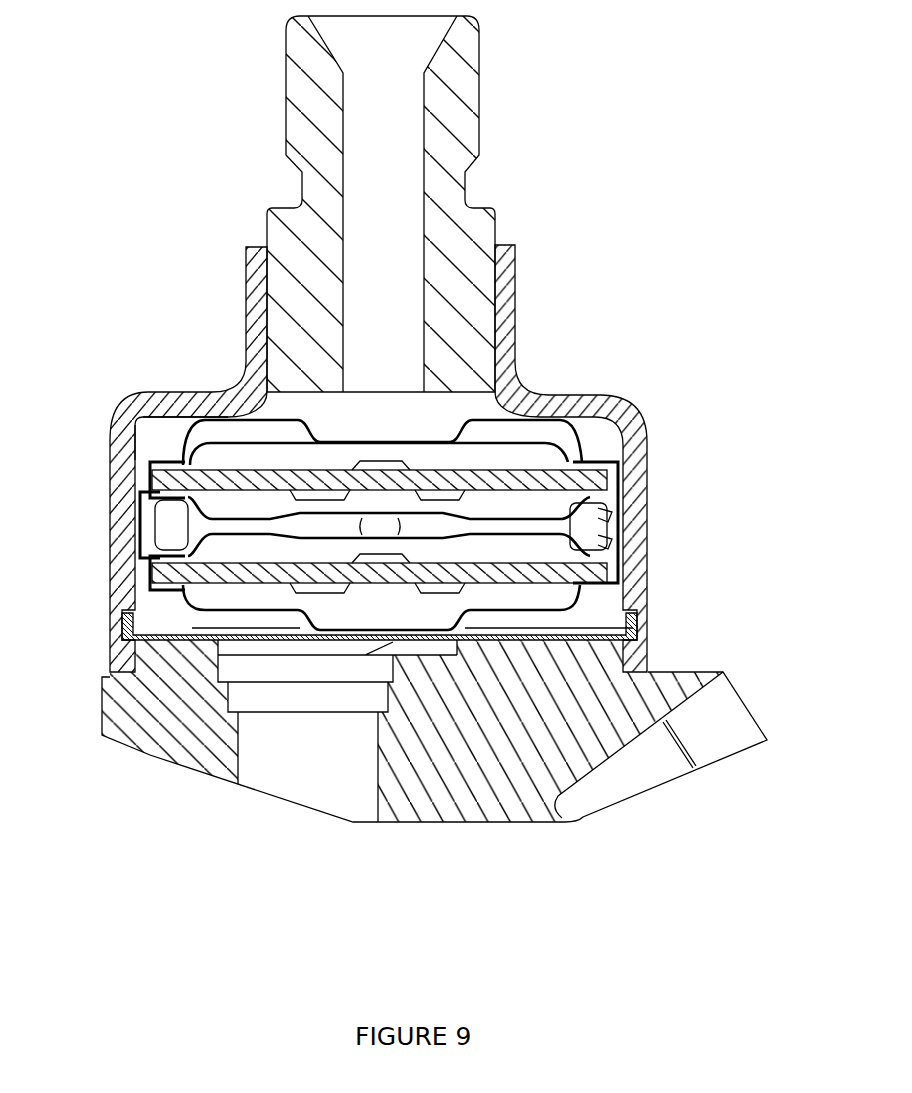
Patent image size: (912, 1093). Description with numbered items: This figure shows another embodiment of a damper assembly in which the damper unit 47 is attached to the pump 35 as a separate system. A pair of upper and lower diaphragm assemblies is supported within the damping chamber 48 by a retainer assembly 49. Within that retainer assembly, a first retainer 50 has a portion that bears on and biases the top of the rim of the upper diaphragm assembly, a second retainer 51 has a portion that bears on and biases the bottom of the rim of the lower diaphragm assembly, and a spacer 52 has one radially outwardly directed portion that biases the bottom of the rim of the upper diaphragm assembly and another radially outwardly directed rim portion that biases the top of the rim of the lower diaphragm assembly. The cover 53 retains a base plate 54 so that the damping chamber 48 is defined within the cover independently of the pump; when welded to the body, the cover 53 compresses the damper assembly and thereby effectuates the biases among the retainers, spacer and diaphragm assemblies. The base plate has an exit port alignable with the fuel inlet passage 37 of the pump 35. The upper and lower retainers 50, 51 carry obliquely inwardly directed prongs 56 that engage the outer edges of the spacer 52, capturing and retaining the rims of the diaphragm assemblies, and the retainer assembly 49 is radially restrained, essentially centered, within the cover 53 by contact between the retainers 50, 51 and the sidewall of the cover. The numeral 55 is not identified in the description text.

The damper unit 47 is at (595, 302).
The damping chamber 48 is at (172, 432).
The retainer assembly 49 is at (571, 425).
The first retainer 50 is at (600, 462).
The second retainer 51 is at (578, 587).
The spacer 52 is at (580, 545).
The cover 53 is at (110, 503).
The base plate 54 is at (150, 640).
The lower membrane 55 is at (333, 638).
The prongs 56 is at (134, 472).
The fuel inlet passage 37 is at (288, 788).
The pump 35 is at (513, 820).